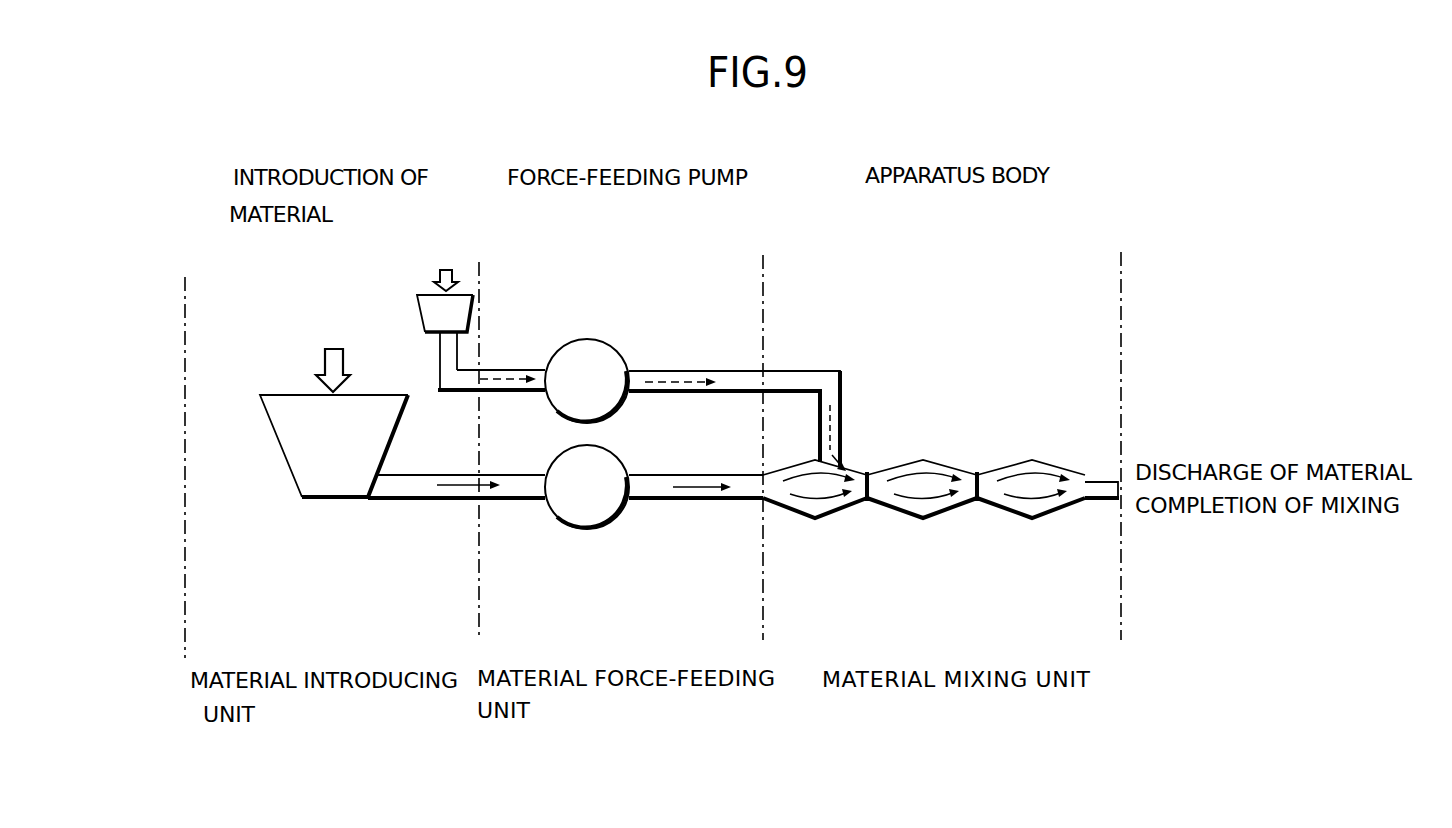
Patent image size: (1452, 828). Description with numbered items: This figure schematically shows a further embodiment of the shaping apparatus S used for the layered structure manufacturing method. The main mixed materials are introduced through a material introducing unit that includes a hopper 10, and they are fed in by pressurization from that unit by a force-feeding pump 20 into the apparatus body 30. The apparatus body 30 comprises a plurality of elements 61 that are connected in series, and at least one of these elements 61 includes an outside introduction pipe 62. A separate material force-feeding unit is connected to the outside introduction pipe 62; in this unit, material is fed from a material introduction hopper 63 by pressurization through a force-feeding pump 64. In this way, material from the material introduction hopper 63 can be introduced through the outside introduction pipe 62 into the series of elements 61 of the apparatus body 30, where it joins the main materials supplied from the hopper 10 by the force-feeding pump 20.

The shaping apparatus S is at (488, 158).
The hopper 10 is at (287, 452).
The force-feeding pump 20 is at (583, 530).
The apparatus body 30 is at (850, 392).
The element 61 is at (850, 470).
The outside introduction pipe 62 is at (795, 372).
The material introduction hopper 63 is at (425, 316).
The force-feeding pump 64 is at (587, 339).